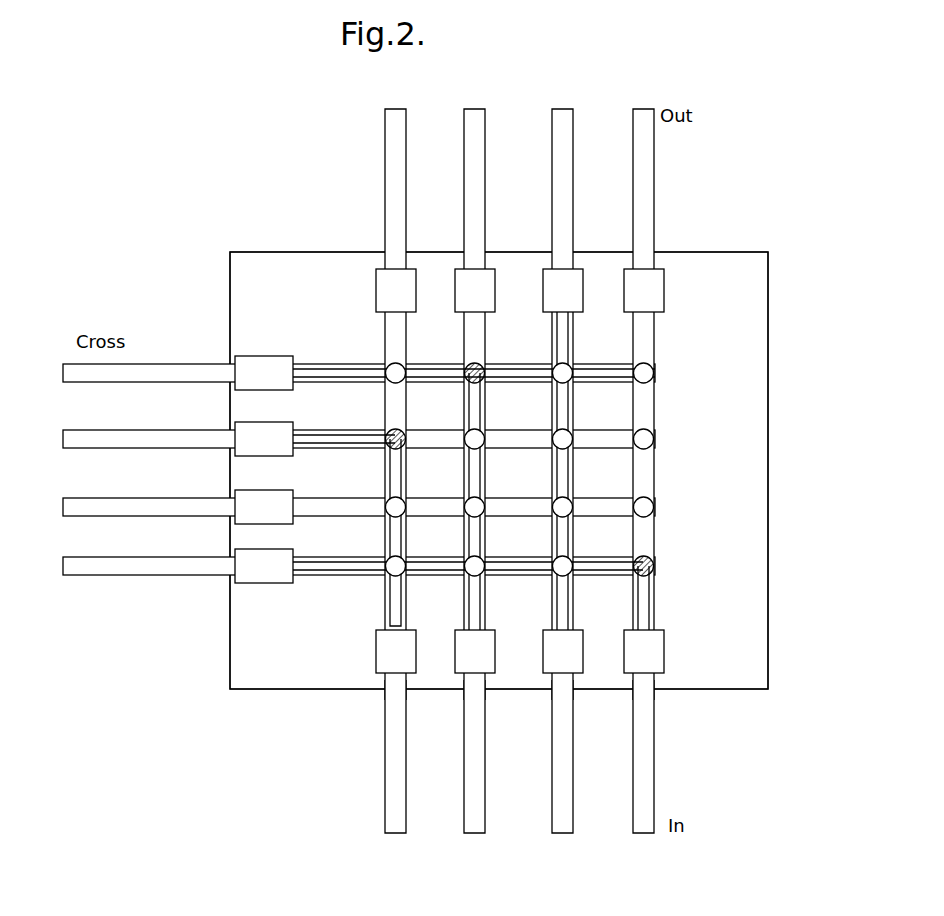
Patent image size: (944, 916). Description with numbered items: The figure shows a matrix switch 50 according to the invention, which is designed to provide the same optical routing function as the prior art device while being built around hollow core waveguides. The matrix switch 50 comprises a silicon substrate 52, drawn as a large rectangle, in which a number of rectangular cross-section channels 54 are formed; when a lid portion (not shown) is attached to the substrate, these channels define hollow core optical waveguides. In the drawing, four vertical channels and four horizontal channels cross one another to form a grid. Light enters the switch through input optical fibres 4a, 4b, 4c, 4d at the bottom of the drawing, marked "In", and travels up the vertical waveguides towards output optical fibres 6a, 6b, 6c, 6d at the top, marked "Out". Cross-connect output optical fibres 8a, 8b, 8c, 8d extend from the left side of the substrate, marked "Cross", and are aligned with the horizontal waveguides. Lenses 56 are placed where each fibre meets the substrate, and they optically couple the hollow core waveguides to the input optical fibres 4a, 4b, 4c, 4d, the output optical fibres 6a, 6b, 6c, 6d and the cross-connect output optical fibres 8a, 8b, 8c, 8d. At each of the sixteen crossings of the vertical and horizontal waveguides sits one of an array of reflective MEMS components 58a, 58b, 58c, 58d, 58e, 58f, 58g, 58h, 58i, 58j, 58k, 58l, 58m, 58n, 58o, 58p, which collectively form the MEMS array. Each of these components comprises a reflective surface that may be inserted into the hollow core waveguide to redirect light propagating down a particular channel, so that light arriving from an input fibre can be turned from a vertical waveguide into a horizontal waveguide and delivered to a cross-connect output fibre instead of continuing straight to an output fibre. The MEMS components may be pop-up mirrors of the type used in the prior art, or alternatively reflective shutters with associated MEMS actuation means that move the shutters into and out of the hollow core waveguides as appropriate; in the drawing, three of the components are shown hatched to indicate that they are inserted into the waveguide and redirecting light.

The matrix switch 50 is at (796, 677).
The silicon substrate 52 is at (731, 262).
The rectangular cross-section channels 54 is at (388, 326).
The lenses 56 is at (407, 300).
The reflective MEMS component 58a is at (388, 366).
The reflective MEMS component 58b is at (482, 366).
The reflective MEMS component 58c is at (569, 366).
The reflective MEMS component 58d is at (653, 371).
The reflective MEMS component 58e is at (402, 432).
The reflective MEMS component 58f is at (481, 432).
The reflective MEMS component 58g is at (569, 432).
The reflective MEMS component 58h is at (652, 437).
The reflective MEMS component 58i is at (400, 499).
The reflective MEMS component 58j is at (481, 498).
The reflective MEMS component 58k is at (567, 498).
The reflective MEMS component 58l is at (648, 500).
The reflective MEMS component 58m is at (389, 574).
The reflective MEMS component 58n is at (468, 574).
The reflective MEMS component 58o is at (556, 572).
The reflective MEMS component 58p is at (641, 572).
The output optical fibre 6a is at (385, 112).
The output optical fibre 6b is at (464, 112).
The output optical fibre 6c is at (552, 112).
The output optical fibre 6d is at (633, 112).
The input optical fibre 4a is at (385, 821).
The input optical fibre 4b is at (464, 821).
The input optical fibre 4c is at (552, 821).
The input optical fibre 4d is at (633, 821).
The cross-connect output optical fibre 8a is at (72, 555).
The cross-connect output optical fibre 8b is at (72, 496).
The cross-connect output optical fibre 8c is at (72, 428).
The cross-connect output optical fibre 8d is at (72, 362).